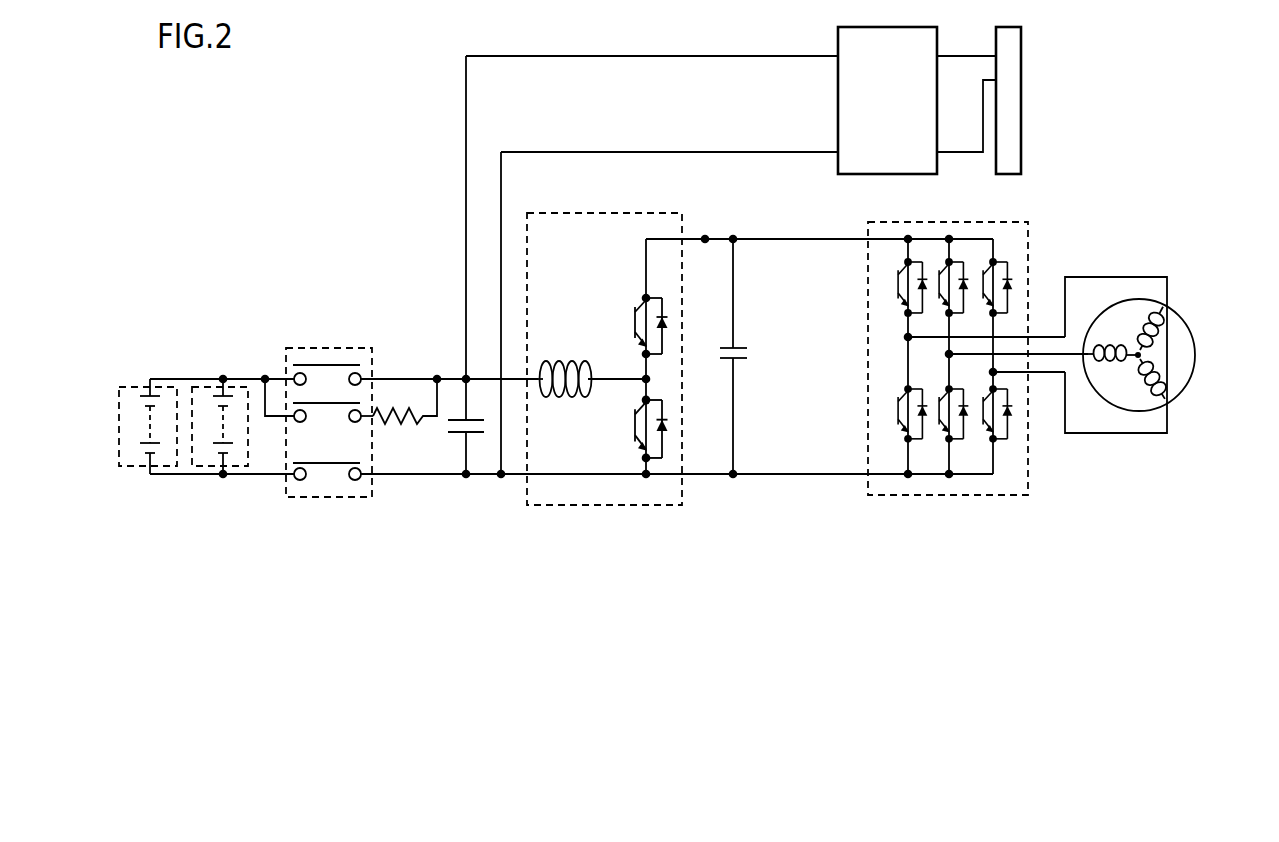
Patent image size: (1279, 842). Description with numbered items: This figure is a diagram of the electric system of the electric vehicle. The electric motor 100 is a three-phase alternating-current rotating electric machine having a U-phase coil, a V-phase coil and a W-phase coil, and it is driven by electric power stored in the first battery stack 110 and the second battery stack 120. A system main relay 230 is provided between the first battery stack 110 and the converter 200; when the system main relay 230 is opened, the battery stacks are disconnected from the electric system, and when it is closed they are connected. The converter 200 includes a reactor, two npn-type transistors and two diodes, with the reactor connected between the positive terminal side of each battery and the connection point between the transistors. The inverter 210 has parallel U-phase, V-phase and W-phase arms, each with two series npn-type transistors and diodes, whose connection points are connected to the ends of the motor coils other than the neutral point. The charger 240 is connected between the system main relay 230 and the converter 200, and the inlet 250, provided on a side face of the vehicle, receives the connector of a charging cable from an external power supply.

The electric motor 100 is at (1182, 388).
The first battery stack 110 is at (204, 388).
The second battery stack 120 is at (131, 388).
The converter 200 is at (664, 210).
The inverter 210 is at (1028, 445).
The system main relay 230 is at (322, 347).
The charger 240 is at (838, 95).
The inlet 250 is at (1022, 106).